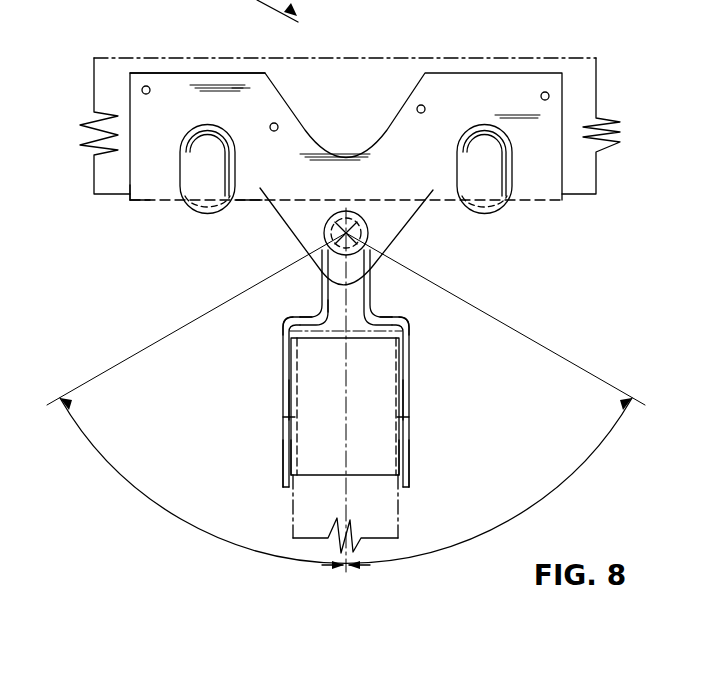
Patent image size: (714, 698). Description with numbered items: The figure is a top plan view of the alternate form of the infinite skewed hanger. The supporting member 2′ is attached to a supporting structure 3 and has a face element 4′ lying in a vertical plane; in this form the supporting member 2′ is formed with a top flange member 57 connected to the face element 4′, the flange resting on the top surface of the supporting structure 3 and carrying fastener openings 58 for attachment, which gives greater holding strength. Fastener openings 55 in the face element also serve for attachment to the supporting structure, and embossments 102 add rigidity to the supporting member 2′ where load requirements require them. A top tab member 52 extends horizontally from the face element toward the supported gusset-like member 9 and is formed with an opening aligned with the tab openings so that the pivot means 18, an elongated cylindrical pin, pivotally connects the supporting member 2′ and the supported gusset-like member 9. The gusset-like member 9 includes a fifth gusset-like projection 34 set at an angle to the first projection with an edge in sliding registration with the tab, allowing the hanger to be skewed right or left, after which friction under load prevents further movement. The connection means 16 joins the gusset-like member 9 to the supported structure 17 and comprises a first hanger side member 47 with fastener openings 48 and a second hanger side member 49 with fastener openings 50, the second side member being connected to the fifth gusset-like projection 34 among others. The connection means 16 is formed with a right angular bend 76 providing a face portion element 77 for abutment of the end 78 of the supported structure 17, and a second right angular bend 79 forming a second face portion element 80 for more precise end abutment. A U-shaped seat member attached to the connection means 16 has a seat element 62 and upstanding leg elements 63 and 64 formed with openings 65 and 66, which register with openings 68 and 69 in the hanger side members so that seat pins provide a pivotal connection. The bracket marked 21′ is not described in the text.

The supporting structure 3 is at (92, 92).
The supporting member 2′ is at (128, 201).
The face element 4′ is at (246, 203).
The supported gusset-like member 9 is at (373, 290).
The connection means 16 is at (411, 428).
The supported structure 17 is at (397, 528).
The pivot means 18 is at (350, 221).
The notched plate 21′ is at (413, 92).
The fifth gusset-like projection 34 is at (386, 252).
The first hanger side member 47 is at (281, 442).
The fastener openings 48 is at (283, 471).
The second hanger side member 49 is at (411, 488).
The fastener openings 50 is at (408, 465).
The top tab member 52 is at (297, 222).
The fastener openings 55 is at (150, 202).
The top flange member 57 is at (207, 70).
The fastener openings 58 is at (146, 85).
The seat element 62 is at (334, 383).
The upstanding leg element 63 is at (292, 457).
The upstanding leg element 64 is at (397, 442).
The opening 65 is at (300, 400).
The opening 66 is at (396, 400).
The opening 68 is at (287, 396).
The opening 69 is at (415, 397).
The right angular bend 76 is at (285, 324).
The face portion element 77 is at (305, 327).
The end 78 is at (328, 326).
The second right angular bend 79 is at (407, 323).
The second face portion element 80 is at (383, 327).
The embossments 102 is at (192, 157).